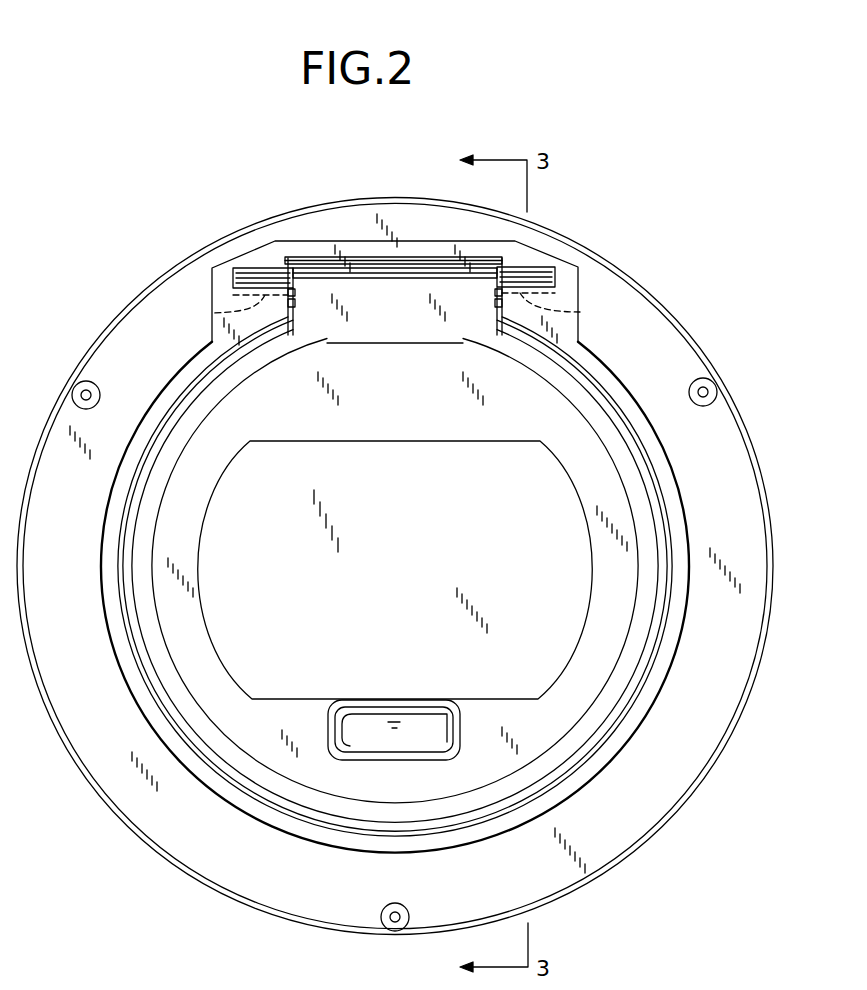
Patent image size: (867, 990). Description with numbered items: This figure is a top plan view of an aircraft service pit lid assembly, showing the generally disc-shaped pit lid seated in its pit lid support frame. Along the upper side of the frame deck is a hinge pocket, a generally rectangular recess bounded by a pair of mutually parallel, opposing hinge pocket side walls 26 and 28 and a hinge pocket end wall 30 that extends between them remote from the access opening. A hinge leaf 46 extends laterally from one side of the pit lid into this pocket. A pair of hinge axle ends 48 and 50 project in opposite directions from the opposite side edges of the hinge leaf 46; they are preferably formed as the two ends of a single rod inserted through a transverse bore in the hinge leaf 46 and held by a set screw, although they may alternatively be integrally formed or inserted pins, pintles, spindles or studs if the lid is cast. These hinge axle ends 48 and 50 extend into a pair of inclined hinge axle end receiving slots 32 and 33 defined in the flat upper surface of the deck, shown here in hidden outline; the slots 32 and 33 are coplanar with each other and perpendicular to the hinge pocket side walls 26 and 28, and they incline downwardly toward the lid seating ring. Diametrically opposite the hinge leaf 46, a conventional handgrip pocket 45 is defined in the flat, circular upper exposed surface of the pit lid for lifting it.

The hinge pocket side wall 26 is at (293, 310).
The hinge pocket side wall 28 is at (497, 310).
The hinge pocket end wall 30 is at (365, 262).
The hinge axle end receiving slot 32 is at (213, 313).
The hinge axle end receiving slot 33 is at (580, 312).
The handgrip pocket 45 is at (388, 738).
The hinge leaf 46 is at (378, 317).
The hinge axle end 48 is at (263, 274).
The hinge axle end 50 is at (530, 270).